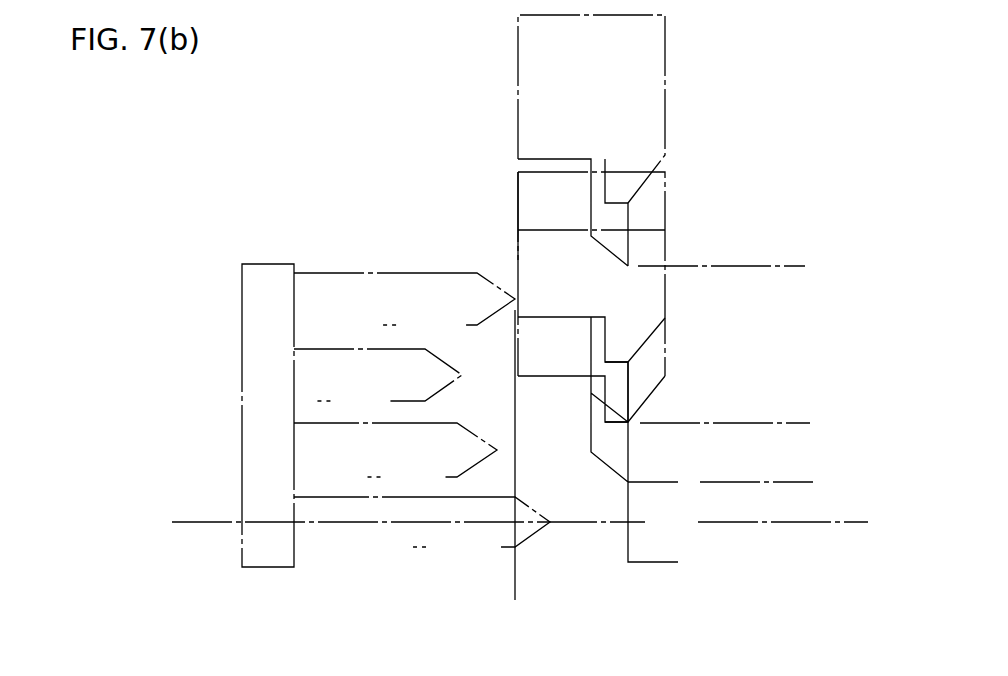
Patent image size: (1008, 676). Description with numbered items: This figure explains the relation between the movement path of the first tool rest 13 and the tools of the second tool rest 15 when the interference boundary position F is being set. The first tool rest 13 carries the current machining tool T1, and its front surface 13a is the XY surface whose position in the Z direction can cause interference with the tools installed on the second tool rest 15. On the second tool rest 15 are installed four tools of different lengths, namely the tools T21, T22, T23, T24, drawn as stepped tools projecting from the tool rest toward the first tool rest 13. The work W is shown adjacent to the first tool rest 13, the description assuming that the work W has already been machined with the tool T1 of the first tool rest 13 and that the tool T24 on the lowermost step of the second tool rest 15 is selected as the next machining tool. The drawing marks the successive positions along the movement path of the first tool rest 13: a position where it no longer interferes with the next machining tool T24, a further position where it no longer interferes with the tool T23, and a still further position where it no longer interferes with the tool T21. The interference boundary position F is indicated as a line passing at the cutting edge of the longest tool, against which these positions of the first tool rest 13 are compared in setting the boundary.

The first tool rest 13 is at (678, 252).
The front surface 13a is at (518, 284).
The second tool rest 15 is at (337, 273).
The machining tool T1 is at (627, 397).
The tool T21 is at (404, 299).
The tool T22 is at (378, 375).
The tool T23 is at (395, 450).
The tool T24 is at (422, 522).
The work W is at (520, 522).
The interference boundary position F is at (515, 470).